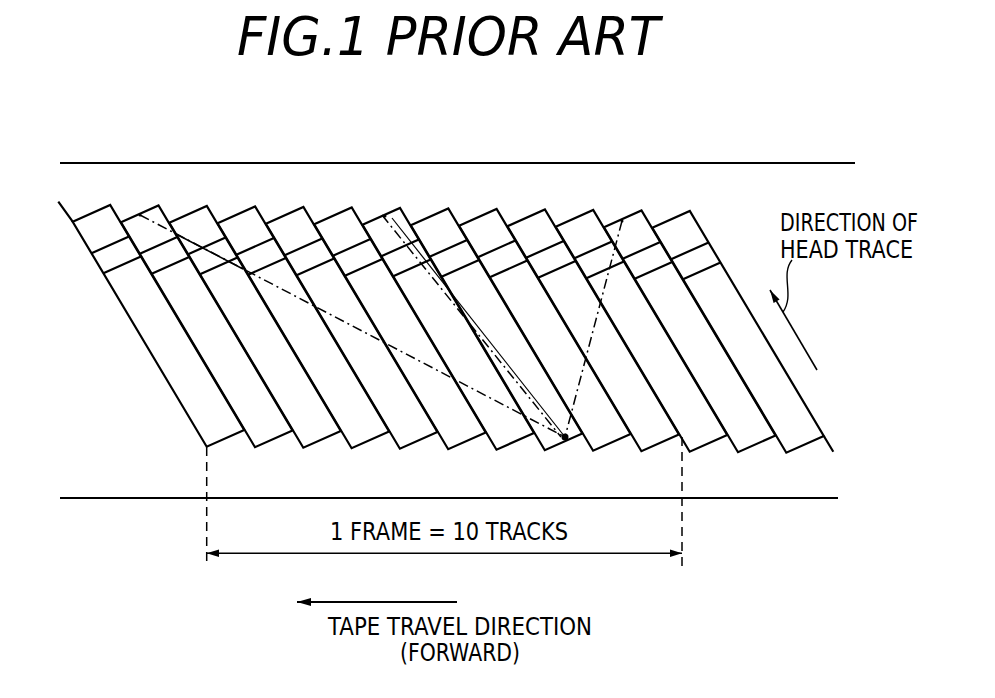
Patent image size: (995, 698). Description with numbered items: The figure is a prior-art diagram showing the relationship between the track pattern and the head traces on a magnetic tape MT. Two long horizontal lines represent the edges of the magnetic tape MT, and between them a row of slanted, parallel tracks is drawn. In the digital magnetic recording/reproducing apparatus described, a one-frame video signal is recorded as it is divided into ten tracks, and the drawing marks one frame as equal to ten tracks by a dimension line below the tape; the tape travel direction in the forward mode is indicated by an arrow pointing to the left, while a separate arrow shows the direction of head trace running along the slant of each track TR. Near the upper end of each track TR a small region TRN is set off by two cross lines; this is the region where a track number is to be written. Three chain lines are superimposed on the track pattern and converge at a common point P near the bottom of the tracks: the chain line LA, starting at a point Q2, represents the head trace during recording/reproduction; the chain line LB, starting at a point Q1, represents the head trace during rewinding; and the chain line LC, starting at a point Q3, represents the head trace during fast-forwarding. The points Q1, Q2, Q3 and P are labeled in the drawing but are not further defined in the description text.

The magnetic tape MT is at (758, 173).
The track TR is at (789, 431).
The track number region TRN is at (692, 262).
The chain line LA is at (412, 210).
The chain line LB is at (180, 238).
The chain line LC is at (613, 223).
The start point Q1 is at (129, 197).
The start point Q2 is at (374, 198).
The start point Q3 is at (637, 202).
The convergence point P is at (570, 452).